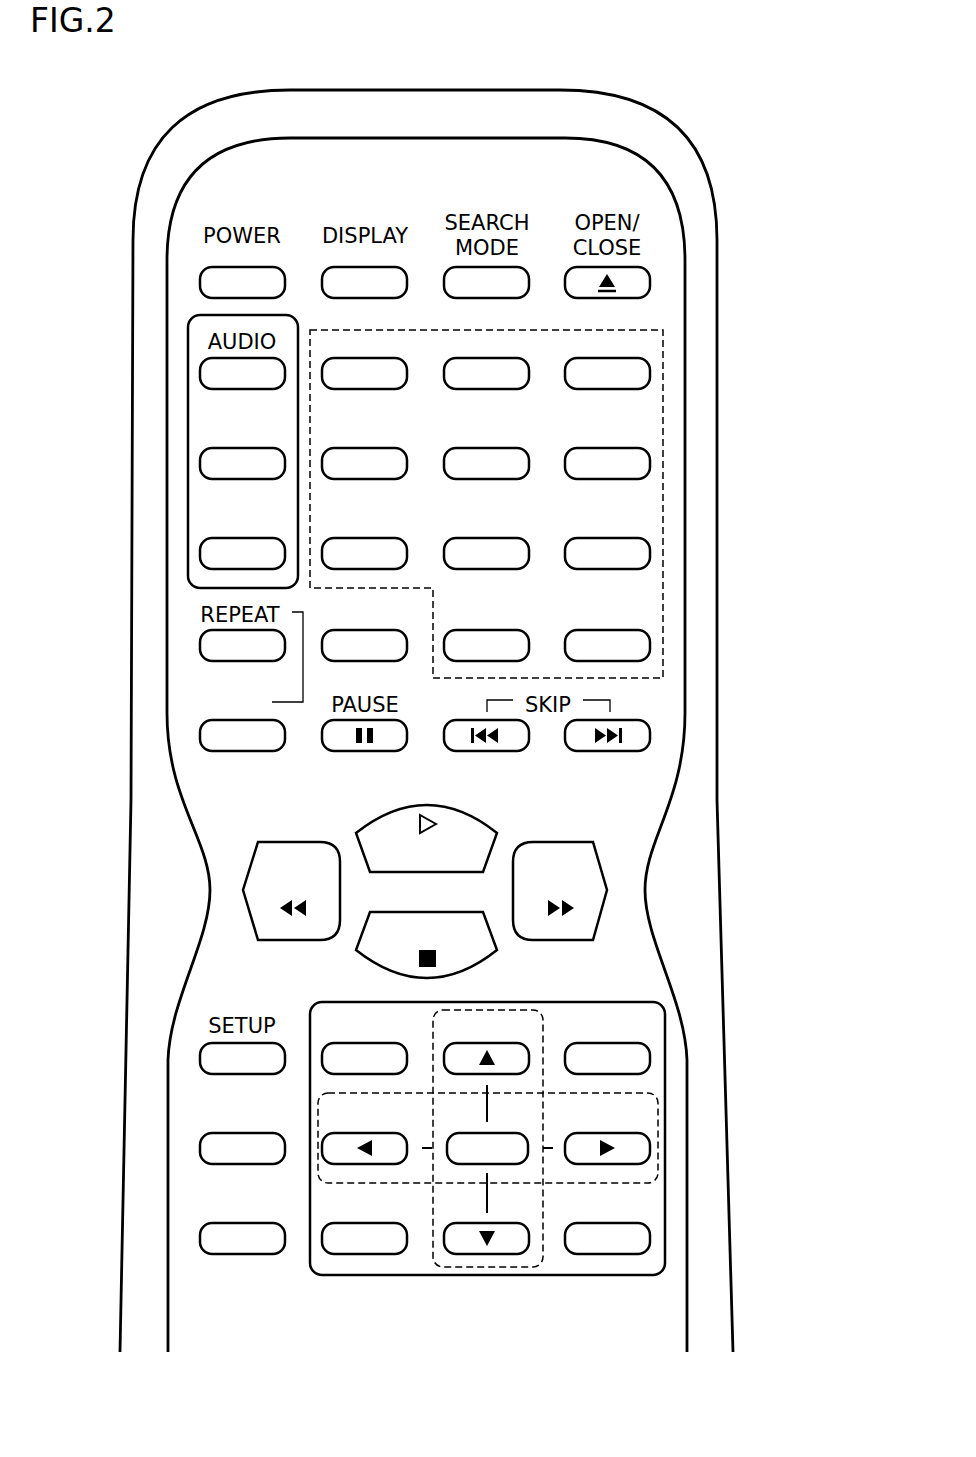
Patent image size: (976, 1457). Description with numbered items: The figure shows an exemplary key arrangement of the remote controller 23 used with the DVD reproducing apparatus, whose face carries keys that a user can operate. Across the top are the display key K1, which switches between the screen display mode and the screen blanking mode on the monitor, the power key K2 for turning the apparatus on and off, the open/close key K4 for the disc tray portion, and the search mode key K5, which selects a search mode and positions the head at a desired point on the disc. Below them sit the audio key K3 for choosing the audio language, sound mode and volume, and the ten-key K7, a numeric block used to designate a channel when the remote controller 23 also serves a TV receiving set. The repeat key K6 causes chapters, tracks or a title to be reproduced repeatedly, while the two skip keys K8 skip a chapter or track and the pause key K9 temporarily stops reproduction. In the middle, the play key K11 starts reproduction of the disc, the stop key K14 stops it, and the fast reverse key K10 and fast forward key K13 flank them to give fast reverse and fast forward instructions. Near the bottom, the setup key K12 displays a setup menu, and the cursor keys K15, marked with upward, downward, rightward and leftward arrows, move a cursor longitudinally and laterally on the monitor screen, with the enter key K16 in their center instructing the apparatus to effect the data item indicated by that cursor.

The remote controller 23 is at (747, 118).
The display key K1 is at (340, 286).
The power key K2 is at (228, 283).
The audio key K3 is at (225, 373).
The open/close key K4 is at (640, 285).
The search mode key K5 is at (513, 290).
The repeat key K6 is at (225, 645).
The ten-key K7 is at (663, 500).
The skip keys K8 is at (640, 737).
The pause key K9 is at (340, 740).
The fast reverse key K10 is at (272, 925).
The play key K11 is at (372, 830).
The setup key K12 is at (215, 1060).
The fast forward key K13 is at (595, 898).
The stop key K14 is at (480, 955).
The cursor keys K15 is at (640, 1148).
The enter key K16 is at (528, 1140).